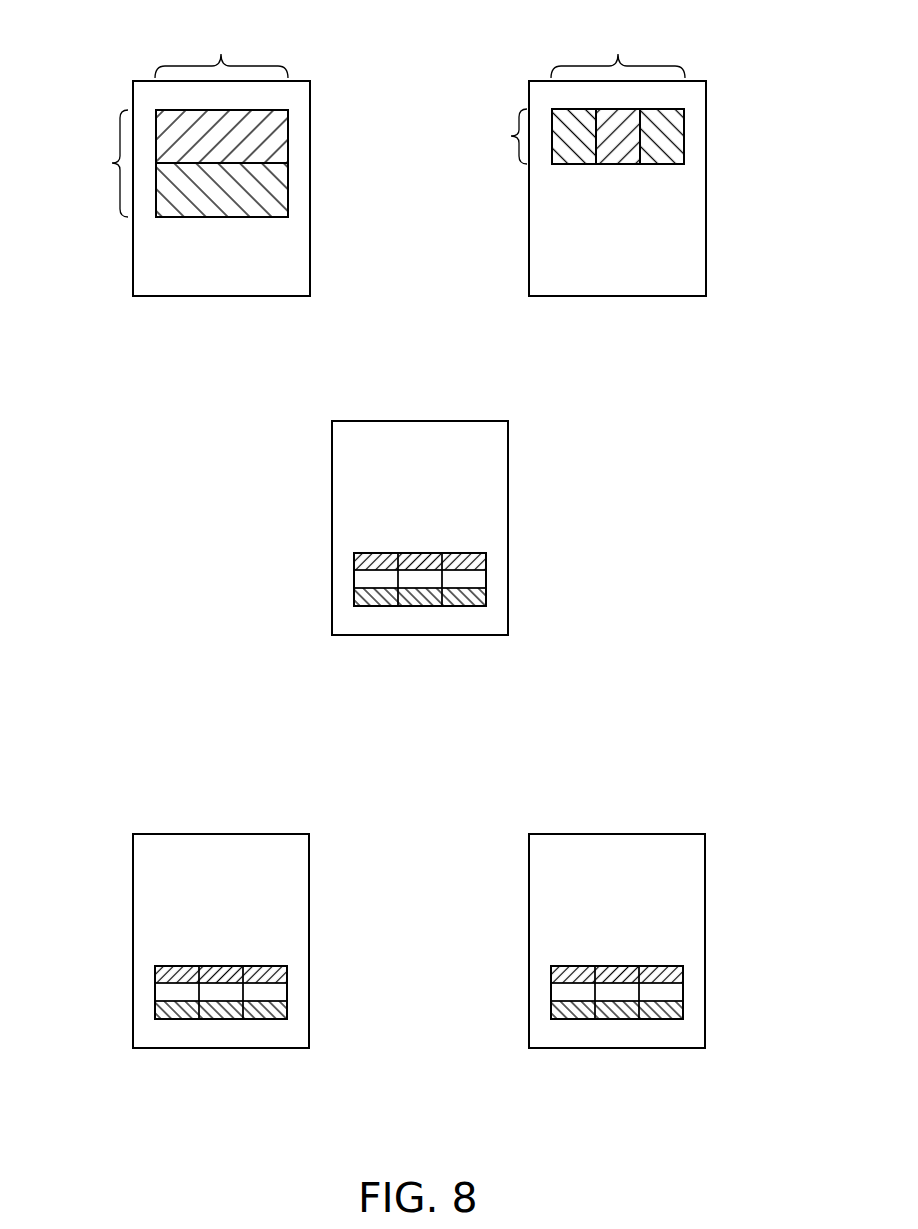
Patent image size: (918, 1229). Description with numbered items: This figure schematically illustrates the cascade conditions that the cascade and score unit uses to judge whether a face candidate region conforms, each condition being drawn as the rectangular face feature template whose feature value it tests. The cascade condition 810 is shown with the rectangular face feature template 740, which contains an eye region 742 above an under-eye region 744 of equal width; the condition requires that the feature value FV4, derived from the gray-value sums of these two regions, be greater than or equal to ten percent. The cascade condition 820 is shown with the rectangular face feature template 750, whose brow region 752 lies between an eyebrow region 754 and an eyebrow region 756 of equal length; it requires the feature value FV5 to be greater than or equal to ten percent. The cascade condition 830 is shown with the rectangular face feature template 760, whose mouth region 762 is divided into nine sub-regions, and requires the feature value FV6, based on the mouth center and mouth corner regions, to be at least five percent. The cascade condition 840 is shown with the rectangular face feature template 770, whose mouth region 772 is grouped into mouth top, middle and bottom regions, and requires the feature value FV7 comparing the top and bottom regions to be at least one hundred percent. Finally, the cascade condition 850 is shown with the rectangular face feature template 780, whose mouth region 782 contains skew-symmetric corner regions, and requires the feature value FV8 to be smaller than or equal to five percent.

The cascade condition 810 is at (398, 43).
The cascade condition 820 is at (796, 43).
The cascade condition 830 is at (598, 381).
The cascade condition 840 is at (219, 947).
The cascade condition 850 is at (615, 947).
The rectangular face feature template 740 is at (310, 295).
The eye region 742 is at (283, 123).
The under-eye region 744 is at (283, 182).
The rectangular face feature template 750 is at (706, 283).
The brow region 752 is at (630, 160).
The eyebrow region 754 is at (575, 160).
The eyebrow region 756 is at (662, 160).
The rectangular face feature template 760 is at (508, 427).
The mouth region 762 is at (353, 602).
The rectangular face feature template 770 is at (264, 938).
The mouth region 772 is at (219, 1023).
The rectangular face feature template 780 is at (660, 938).
The mouth region 782 is at (615, 1023).